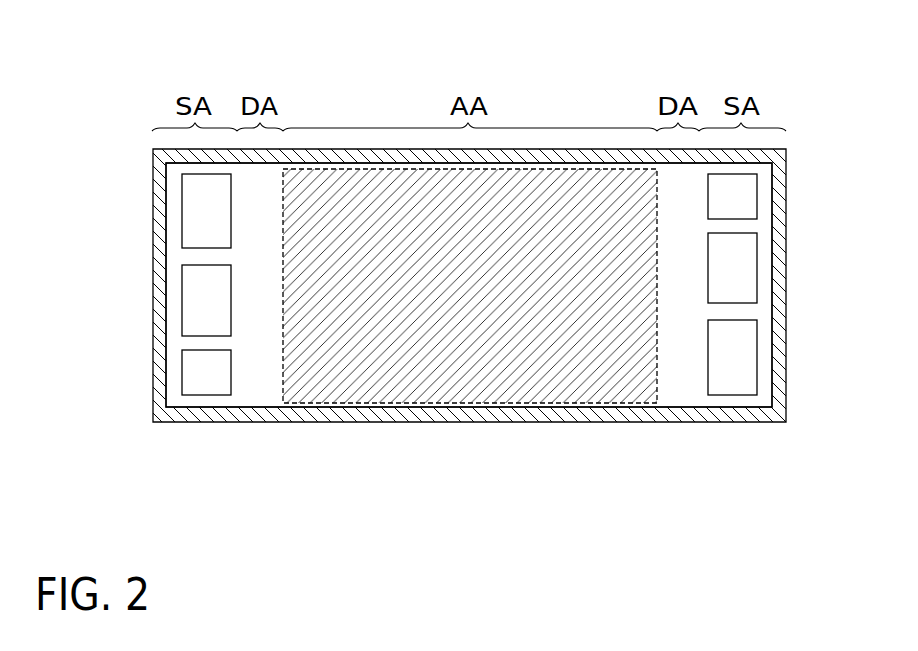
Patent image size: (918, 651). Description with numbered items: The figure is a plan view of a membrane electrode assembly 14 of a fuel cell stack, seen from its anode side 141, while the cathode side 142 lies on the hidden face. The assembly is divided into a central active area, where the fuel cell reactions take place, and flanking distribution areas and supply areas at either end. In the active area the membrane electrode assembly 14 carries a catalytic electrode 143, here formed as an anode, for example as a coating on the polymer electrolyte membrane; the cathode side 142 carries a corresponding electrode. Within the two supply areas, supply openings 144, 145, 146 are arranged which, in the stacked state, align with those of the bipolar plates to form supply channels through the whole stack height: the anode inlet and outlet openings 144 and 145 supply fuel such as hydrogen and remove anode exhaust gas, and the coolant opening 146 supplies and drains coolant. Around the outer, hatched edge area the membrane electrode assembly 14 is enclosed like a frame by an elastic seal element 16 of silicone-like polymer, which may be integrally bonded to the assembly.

The membrane electrode assembly 14 is at (597, 79).
The elastic seal element 16 is at (457, 413).
The anode side 141 is at (277, 374).
The cathode side 142 is at (334, 452).
The catalytic electrode 143 is at (492, 297).
The anode inlet opening 144 is at (182, 376).
The anode outlet opening 145 is at (182, 211).
The coolant inlet opening 146 is at (182, 300).